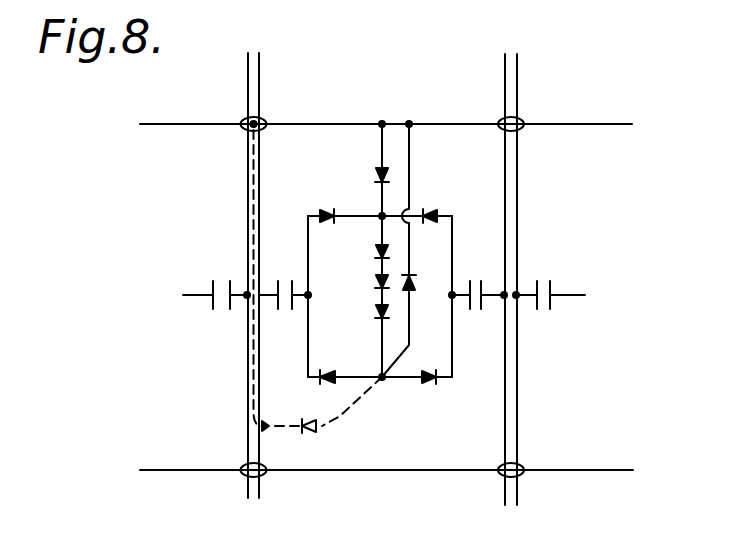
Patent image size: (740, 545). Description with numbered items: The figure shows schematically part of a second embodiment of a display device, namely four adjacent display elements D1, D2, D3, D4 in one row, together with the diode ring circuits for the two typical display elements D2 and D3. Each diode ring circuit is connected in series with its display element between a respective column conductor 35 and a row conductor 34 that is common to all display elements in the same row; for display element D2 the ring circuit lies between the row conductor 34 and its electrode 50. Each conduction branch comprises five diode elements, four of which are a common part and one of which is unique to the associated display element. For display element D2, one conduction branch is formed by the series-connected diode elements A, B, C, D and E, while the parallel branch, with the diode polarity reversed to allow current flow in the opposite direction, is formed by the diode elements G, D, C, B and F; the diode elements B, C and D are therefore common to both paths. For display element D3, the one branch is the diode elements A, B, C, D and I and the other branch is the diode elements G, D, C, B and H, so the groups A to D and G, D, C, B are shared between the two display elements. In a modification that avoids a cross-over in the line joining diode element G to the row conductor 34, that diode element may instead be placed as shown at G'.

The row conductor 34 is at (568, 124).
The column conductor 35 is at (247, 76).
The electrode 50 is at (293, 300).
The display element D1 is at (216, 282).
The display element D2 is at (285, 282).
The display element D3 is at (478, 282).
The display element D4 is at (549, 282).
The diode element A is at (372, 179).
The diode element B is at (374, 253).
The diode element C is at (374, 283).
The diode element D is at (374, 313).
The diode element E is at (327, 366).
The diode element F is at (326, 202).
The diode element G is at (417, 285).
The diode element H is at (431, 202).
The diode element I is at (429, 366).
The diode element G' is at (328, 418).